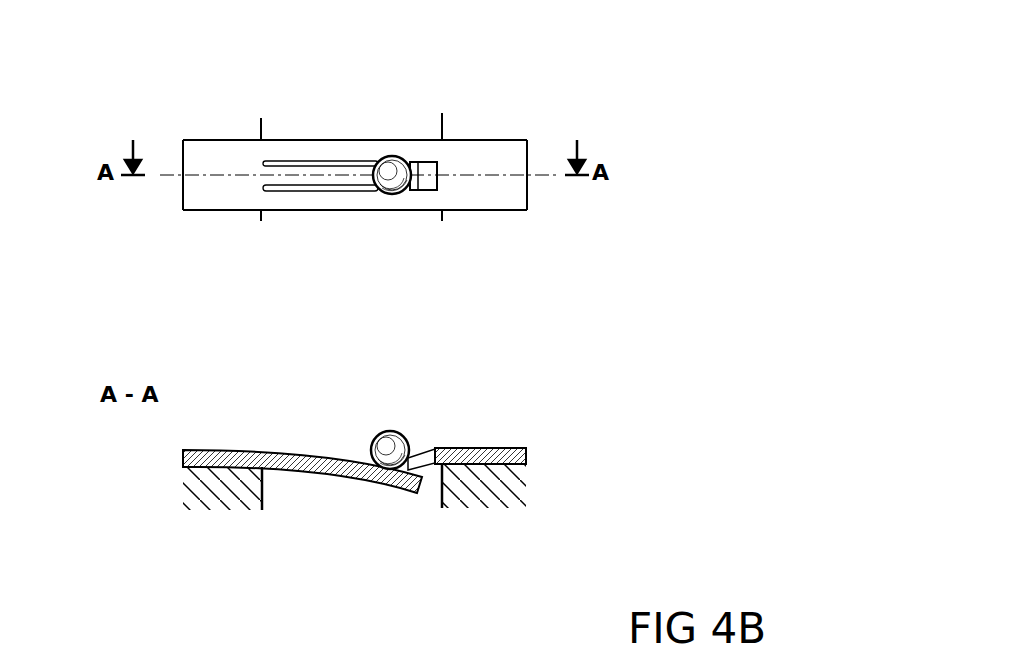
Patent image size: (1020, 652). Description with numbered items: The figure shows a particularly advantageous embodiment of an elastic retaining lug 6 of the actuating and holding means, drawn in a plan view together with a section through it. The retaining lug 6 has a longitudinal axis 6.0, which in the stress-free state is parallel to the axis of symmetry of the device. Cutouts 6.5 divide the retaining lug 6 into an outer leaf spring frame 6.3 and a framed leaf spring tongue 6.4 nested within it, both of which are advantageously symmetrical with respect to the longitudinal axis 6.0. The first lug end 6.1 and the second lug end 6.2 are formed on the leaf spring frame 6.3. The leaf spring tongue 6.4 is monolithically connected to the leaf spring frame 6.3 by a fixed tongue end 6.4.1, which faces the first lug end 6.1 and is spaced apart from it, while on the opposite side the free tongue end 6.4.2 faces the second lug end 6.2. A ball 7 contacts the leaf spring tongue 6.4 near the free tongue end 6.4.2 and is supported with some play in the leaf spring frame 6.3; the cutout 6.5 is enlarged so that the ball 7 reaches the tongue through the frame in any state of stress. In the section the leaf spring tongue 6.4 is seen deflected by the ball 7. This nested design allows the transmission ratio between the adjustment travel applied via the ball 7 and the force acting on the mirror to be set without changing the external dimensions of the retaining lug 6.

The retaining lug 6 is at (578, 81).
The longitudinal axis 6.0 is at (163, 175).
The first lug end 6.1 is at (183, 208).
The second lug end 6.2 is at (527, 210).
The leaf spring frame 6.3 is at (323, 148).
The leaf spring tongue 6.4 is at (350, 192).
The fixed tongue end 6.4.1 is at (265, 193).
The free tongue end 6.4.2 is at (430, 192).
The cutout 6.5 is at (433, 160).
The ball 7 is at (405, 193).